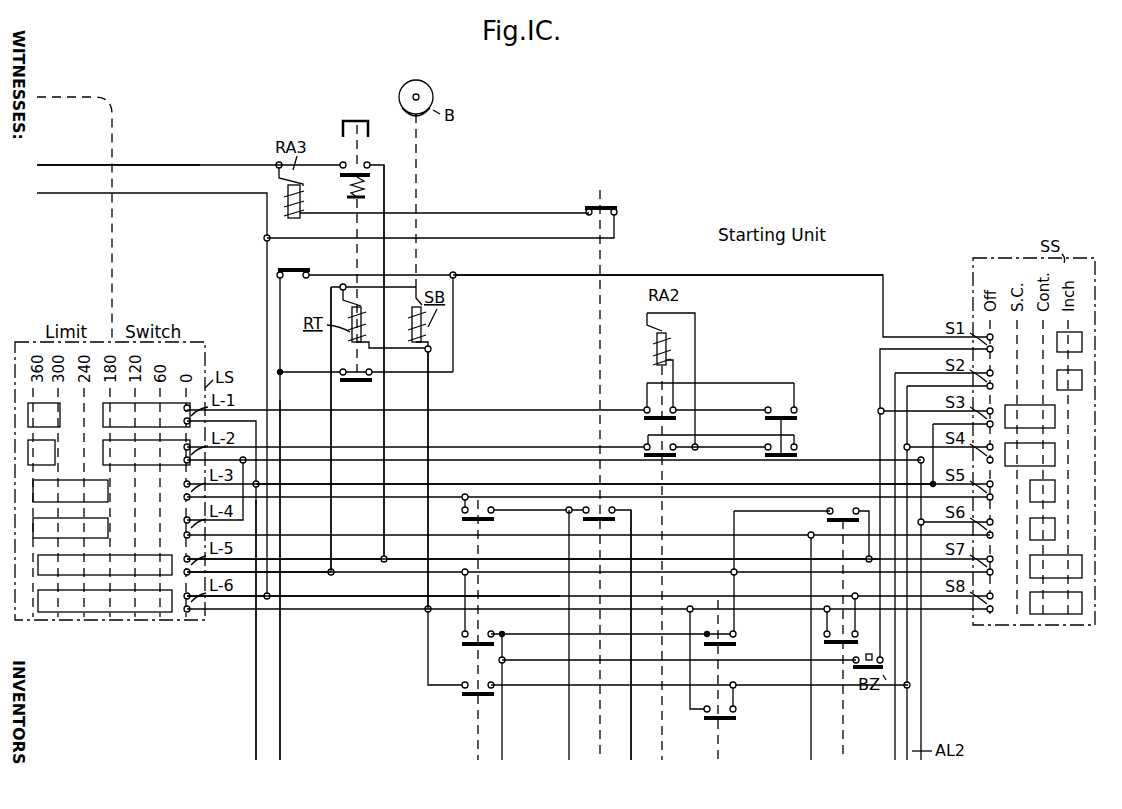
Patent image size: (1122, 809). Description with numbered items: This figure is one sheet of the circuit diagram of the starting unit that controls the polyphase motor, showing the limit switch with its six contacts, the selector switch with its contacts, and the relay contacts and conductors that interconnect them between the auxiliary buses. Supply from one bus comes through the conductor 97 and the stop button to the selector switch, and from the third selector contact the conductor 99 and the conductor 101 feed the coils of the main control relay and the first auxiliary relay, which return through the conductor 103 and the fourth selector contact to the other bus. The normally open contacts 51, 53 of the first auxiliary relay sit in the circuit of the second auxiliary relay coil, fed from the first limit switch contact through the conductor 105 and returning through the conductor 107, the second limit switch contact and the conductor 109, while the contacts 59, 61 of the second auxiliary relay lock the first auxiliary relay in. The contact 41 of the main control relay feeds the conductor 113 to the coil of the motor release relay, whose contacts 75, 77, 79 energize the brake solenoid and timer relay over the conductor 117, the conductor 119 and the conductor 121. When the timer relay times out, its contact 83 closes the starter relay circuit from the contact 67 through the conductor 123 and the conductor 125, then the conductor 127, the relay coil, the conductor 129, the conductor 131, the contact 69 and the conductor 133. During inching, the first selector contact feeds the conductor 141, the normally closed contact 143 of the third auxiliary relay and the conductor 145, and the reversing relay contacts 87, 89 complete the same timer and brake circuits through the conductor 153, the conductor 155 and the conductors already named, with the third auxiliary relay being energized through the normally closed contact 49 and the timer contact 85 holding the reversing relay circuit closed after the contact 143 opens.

The conductor 127 is at (170, 170).
The conductor 129 is at (170, 198).
The normally open contact of timer relay RT 83 is at (362, 172).
The normally closed contact of main control relay RC 49 is at (598, 208).
The normally closed contact of auxiliary relay RA3 143 is at (300, 258).
The conductor 141 is at (613, 278).
The normally open contact of timer relay RT 85 is at (372, 383).
The conductor 125 is at (385, 402).
The conductor 105 is at (452, 410).
The conductor 119 is at (428, 432).
The conductor 107 is at (484, 447).
The conductor 153 is at (330, 432).
The conductor 109 is at (508, 461).
The conductor 99 is at (686, 470).
The conductor 103 is at (812, 736).
The normally open contact of relay RM 75 is at (497, 514).
The normally open contact of main control relay RC 41 is at (617, 516).
The conductor 113 is at (627, 549).
The conductor 123 is at (672, 559).
The conductor 131 is at (332, 589).
The conductor 117 is at (387, 564).
The conductor 133 is at (381, 597).
The normally open contact of relay RM 77 is at (484, 640).
The conductor 155 is at (562, 635).
The normally open contact of reversing relay RV 87 is at (730, 642).
The conductor 97 is at (740, 658).
The normally open contact of relay RR 67 is at (828, 516).
The normally open contact of relay RR 69 is at (858, 644).
The normally open contact of relay RM 79 is at (471, 684).
The conductor 121 is at (552, 686).
The normally open contact of reversing relay RV 89 is at (708, 710).
The conductor 145 is at (281, 715).
The conductor 101 is at (256, 722).
The normally open contact of auxiliary relay RA2 59 is at (649, 413).
The normally open contact of auxiliary relay RA2 61 is at (649, 450).
The normally open contact of auxiliary relay RA1 51 is at (782, 415).
The normally open contact of auxiliary relay RA1 53 is at (801, 456).